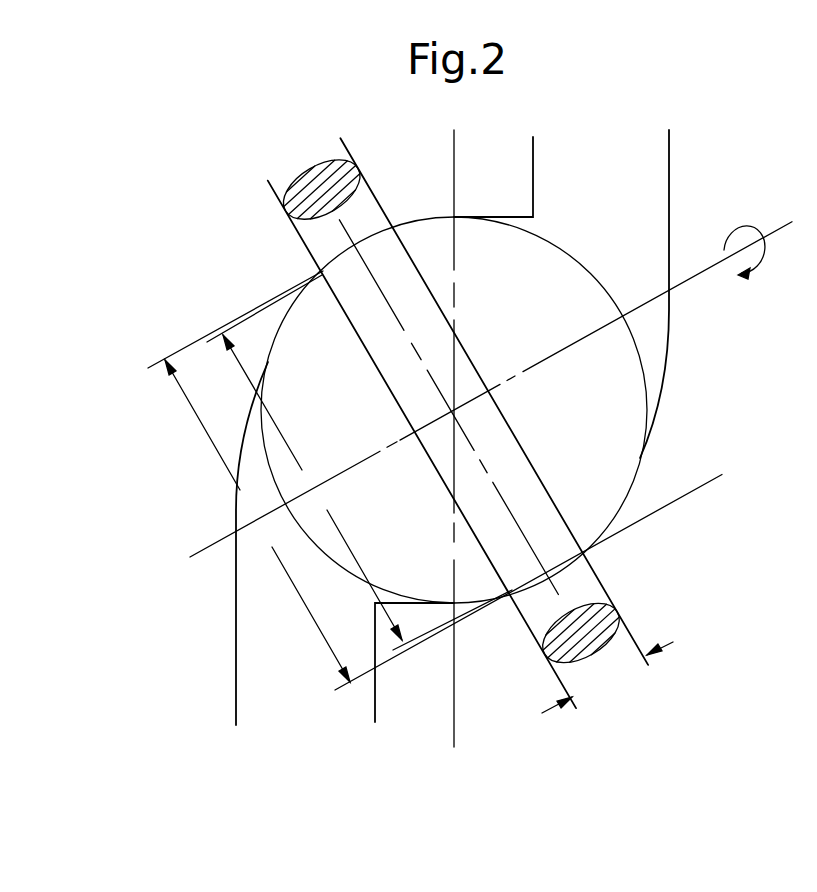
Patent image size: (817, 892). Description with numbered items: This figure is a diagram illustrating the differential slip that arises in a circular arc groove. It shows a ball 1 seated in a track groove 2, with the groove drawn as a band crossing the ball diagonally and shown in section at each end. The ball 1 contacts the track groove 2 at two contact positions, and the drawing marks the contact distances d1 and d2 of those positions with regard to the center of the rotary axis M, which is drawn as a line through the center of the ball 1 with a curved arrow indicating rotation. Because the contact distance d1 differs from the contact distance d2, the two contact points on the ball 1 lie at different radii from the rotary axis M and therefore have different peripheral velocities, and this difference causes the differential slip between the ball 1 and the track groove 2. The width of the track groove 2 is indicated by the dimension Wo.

The ball 1 is at (562, 252).
The track groove 2 is at (660, 404).
The axis of rotation M is at (697, 280).
The contact distance d1 is at (359, 462).
The contact distance d2 is at (435, 480).
The bore width Wo is at (607, 677).